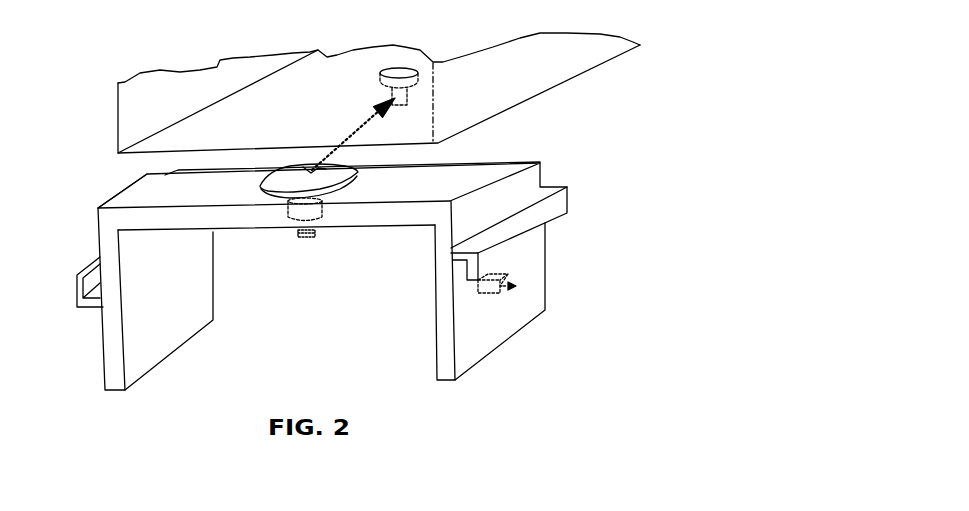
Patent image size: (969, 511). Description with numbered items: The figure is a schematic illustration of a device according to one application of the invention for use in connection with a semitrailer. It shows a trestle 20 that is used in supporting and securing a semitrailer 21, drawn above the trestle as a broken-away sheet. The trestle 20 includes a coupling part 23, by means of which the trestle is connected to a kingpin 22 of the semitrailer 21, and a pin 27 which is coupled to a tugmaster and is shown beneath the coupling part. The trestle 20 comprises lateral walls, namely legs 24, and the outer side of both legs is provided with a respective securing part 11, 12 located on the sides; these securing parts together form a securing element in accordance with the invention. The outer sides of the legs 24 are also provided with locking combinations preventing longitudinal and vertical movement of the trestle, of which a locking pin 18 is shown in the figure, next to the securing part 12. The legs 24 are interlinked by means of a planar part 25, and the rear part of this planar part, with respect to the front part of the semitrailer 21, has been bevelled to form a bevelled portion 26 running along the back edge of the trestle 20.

The trestle 20 is at (537, 140).
The semitrailer 21 is at (597, 57).
The kingpin 22 is at (415, 92).
The coupling part 23 is at (358, 172).
The legs 24 is at (102, 362).
The planar part 25 is at (135, 184).
The bevelled portion 26 is at (477, 156).
The pin 27 is at (312, 240).
The securing part 12 is at (568, 200).
The securing part 11 is at (77, 284).
The locking pin 18 is at (494, 296).